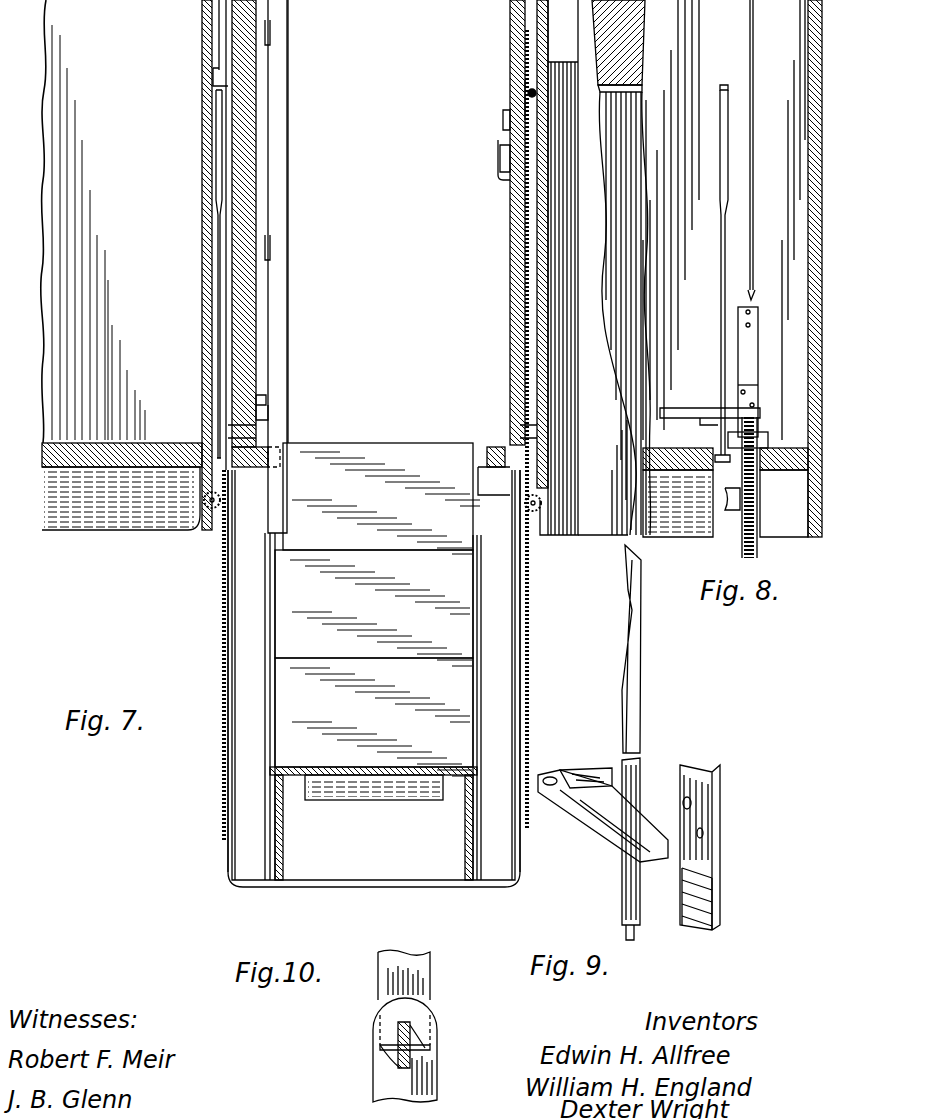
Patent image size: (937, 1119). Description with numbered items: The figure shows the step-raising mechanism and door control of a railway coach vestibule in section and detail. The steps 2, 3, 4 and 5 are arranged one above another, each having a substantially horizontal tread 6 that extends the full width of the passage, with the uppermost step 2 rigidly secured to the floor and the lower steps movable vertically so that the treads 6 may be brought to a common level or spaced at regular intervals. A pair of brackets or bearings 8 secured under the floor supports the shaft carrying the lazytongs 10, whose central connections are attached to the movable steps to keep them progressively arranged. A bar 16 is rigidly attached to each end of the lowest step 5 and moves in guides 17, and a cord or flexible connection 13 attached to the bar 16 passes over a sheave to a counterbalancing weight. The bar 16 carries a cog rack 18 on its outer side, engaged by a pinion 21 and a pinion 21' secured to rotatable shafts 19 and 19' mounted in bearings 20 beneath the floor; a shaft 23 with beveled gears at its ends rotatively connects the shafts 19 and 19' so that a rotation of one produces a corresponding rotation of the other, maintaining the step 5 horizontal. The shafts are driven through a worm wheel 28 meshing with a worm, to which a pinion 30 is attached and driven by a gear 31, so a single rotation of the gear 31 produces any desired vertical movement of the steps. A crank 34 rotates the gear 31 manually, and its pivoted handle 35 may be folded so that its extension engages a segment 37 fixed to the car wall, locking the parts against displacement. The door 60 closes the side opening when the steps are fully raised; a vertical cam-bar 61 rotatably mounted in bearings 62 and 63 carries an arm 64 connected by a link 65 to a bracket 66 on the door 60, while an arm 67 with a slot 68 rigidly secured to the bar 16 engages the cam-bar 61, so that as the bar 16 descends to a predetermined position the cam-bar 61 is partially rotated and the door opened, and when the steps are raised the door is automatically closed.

In FIG. 7, the step 2 is at (381, 498).
In FIG. 7, the step 3 is at (374, 608).
In FIG. 7, the step 4 is at (374, 717).
In FIG. 7, the step 5 is at (358, 778).
In FIG. 7, the tread 6 is at (374, 648).
In FIG. 7, the bracket or bearing 8 is at (222, 22).
In FIG. 7, the lazytongs 10 is at (266, 600).
In FIG. 7, the cord or flexible connection 13 is at (240, 132).
In FIG. 8, the cord or flexible connection 13 is at (752, 180).
In FIG. 7, the bar 16 is at (228, 662).
In FIG. 8, the bar 16 is at (752, 350).
In FIG. 9, the bar 16 is at (720, 790).
In FIG. 7, the guide 17 is at (250, 433).
In FIG. 8, the guide 17 is at (768, 438).
In FIG. 7, the cog rack 18 is at (225, 628).
In FIG. 8, the cog rack 18 is at (758, 552).
In FIG. 9, the cog rack 18 is at (712, 882).
In FIG. 7, the rotatable shaft 19 is at (544, 534).
In FIG. 7, the rotatable shaft 19' is at (121, 516).
In FIG. 8, the rotatable shaft 19' is at (678, 519).
In FIG. 8, the bearing 20 is at (735, 505).
In FIG. 7, the pinion 21 is at (582, 286).
In FIG. 7, the pinion 21' is at (187, 501).
In FIG. 8, the pinion 21' is at (791, 268).
In FIG. 7, the shaft 23 is at (494, 472).
In FIG. 7, the worm wheel 28 is at (530, 90).
In FIG. 7, the pinion 30 is at (524, 95).
In FIG. 7, the gear 31 is at (498, 170).
In FIG. 7, the crank 34 is at (503, 120).
In FIG. 7, the handle 35 is at (500, 155).
In FIG. 7, the segment 37 is at (510, 62).
In FIG. 7, the door 60 is at (288, 285).
In FIG. 7, the cam-bar 61 is at (216, 280).
In FIG. 8, the cam-bar 61 is at (720, 130).
In FIG. 9, the cam-bar 61 is at (636, 712).
In FIG. 10, the cam-bar 61 is at (412, 1062).
In FIG. 7, the bearing 62 is at (213, 88).
In FIG. 8, the bearing 62 is at (718, 85).
In FIG. 7, the bearing 63 is at (202, 432).
In FIG. 8, the arm 64 is at (690, 408).
In FIG. 9, the arm 64 is at (590, 805).
In FIG. 10, the arm 64 is at (423, 970).
In FIG. 7, the link 65 is at (266, 398).
In FIG. 9, the link 65 is at (590, 770).
In FIG. 7, the bracket 66 is at (268, 413).
In FIG. 9, the arm 67 is at (706, 835).
In FIG. 10, the arm 67 is at (432, 1015).
In FIG. 9, the slot 68 is at (640, 818).